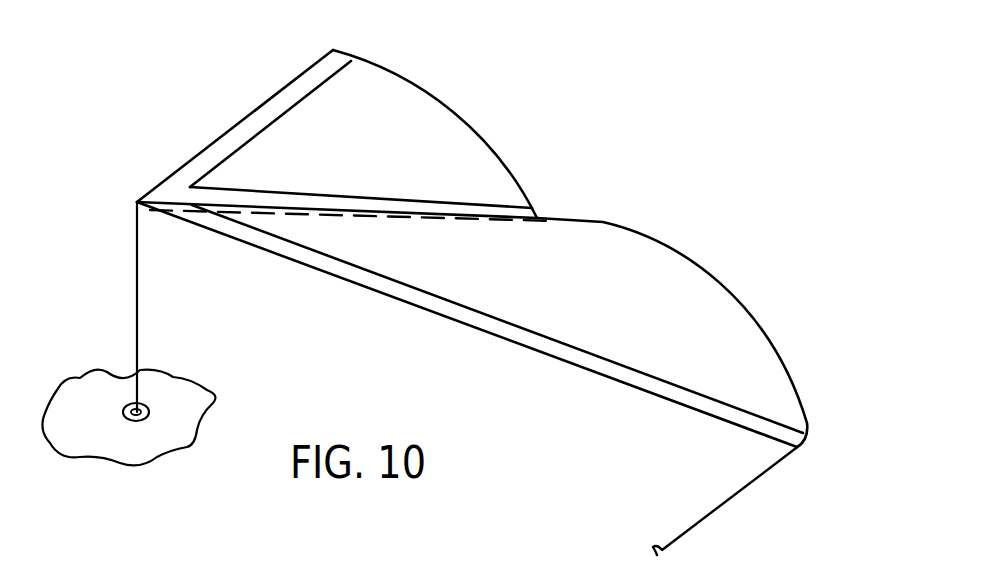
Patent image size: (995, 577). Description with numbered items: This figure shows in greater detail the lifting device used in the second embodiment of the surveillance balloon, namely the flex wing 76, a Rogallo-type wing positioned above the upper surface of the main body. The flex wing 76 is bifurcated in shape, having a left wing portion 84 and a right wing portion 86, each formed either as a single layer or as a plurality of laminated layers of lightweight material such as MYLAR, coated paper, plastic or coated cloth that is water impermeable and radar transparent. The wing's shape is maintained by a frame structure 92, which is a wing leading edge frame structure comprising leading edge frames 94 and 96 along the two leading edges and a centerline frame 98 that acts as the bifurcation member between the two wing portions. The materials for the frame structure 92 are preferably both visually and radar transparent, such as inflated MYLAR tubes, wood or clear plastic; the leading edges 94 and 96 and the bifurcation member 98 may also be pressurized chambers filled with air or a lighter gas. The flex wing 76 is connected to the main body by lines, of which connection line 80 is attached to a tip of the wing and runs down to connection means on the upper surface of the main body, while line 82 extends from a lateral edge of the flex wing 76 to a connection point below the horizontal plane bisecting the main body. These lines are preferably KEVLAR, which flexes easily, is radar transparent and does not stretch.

The flex wing 76 is at (450, 104).
The connection line 80 is at (137, 323).
The connection line 82 is at (758, 477).
The left wing portion 84 is at (589, 298).
The right wing portion 86 is at (382, 142).
The frame structure 92 is at (205, 138).
The leading edge frame 94 is at (288, 82).
The leading edge frame 96 is at (418, 306).
The centerline frame 98 is at (437, 202).